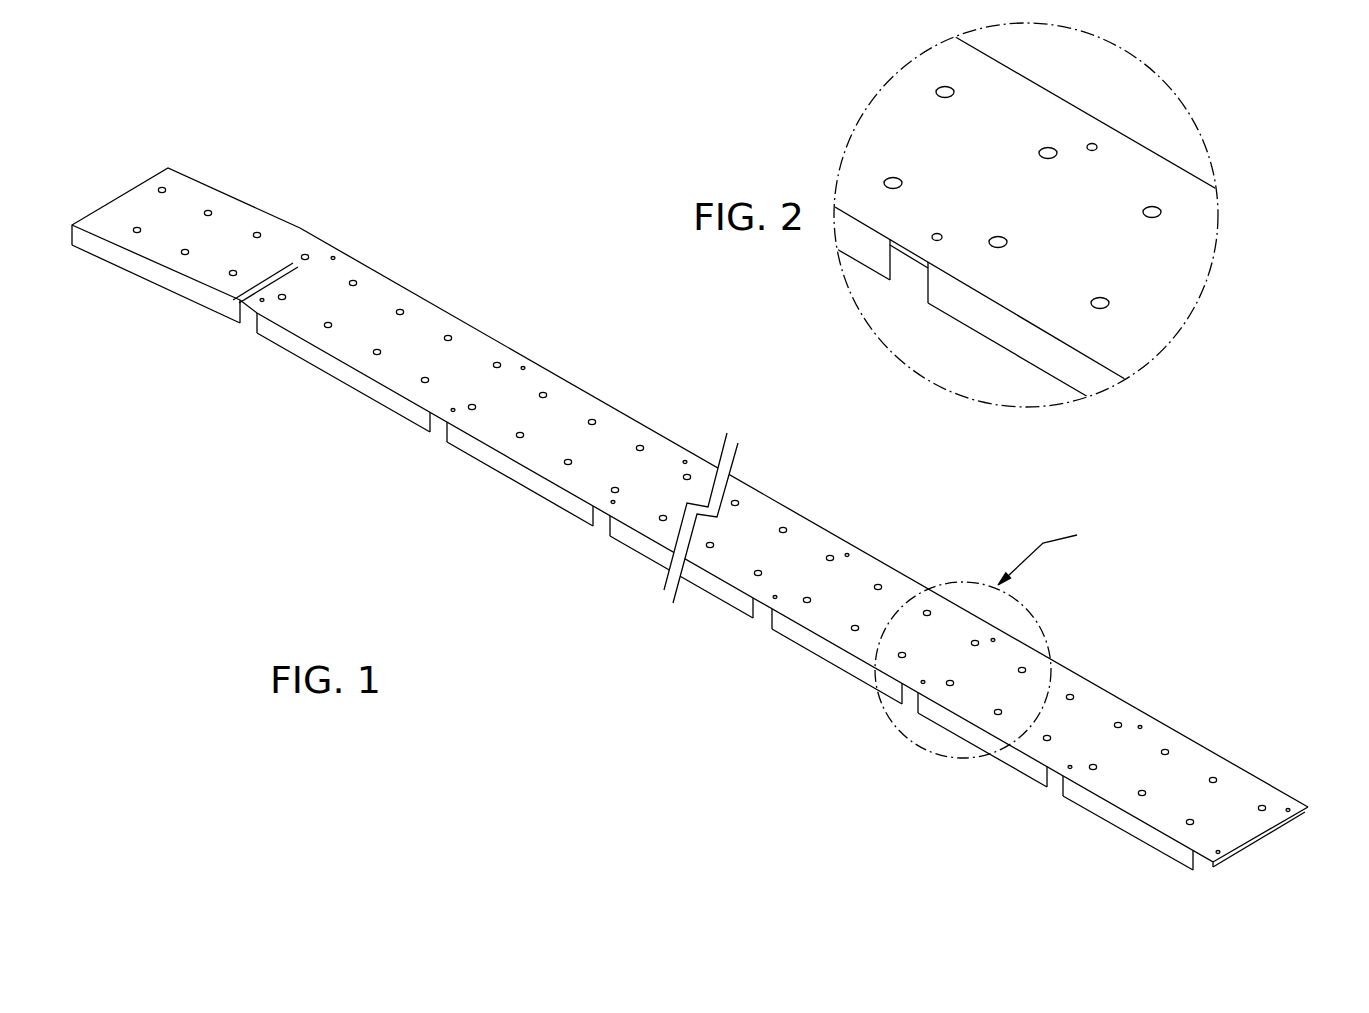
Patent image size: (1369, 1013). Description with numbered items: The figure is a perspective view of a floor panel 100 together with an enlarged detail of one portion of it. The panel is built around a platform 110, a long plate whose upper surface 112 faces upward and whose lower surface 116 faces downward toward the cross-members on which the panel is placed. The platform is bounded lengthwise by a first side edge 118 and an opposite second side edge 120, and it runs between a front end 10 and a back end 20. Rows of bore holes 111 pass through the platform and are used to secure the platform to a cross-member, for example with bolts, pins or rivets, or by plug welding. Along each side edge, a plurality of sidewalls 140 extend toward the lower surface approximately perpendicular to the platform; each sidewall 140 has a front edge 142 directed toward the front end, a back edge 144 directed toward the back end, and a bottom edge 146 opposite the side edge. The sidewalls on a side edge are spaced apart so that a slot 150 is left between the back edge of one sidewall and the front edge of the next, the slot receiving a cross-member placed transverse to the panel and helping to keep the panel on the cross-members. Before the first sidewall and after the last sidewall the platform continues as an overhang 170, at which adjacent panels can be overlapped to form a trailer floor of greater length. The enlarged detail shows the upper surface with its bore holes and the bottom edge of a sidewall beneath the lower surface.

In FIG. 1, the front end 10 is at (1265, 833).
In FIG. 1, the back end 20 is at (126, 192).
In FIG. 1, the floor panel 100 is at (310, 529).
In FIG. 1, the platform 110 is at (726, 572).
In FIG. 2, the platform 110 is at (1027, 206).
In FIG. 1, the bore holes 111 is at (995, 640).
In FIG. 1, the upper surface 112 is at (605, 430).
In FIG. 2, the upper surface 112 is at (1017, 125).
In FIG. 2, the lower surface 116 is at (903, 243).
In FIG. 1, the first side edge 118 is at (804, 517).
In FIG. 1, the second side edge 120 is at (498, 484).
In FIG. 1, the sidewall 140 is at (343, 372).
In FIG. 1, the front edge 142 is at (755, 618).
In FIG. 1, the back edge 144 is at (397, 444).
In FIG. 1, the bottom edge 146 is at (321, 382).
In FIG. 2, the bottom edge 146 is at (1011, 352).
In FIG. 1, the slot 150 is at (628, 567).
In FIG. 1, the overhang 170 is at (688, 568).